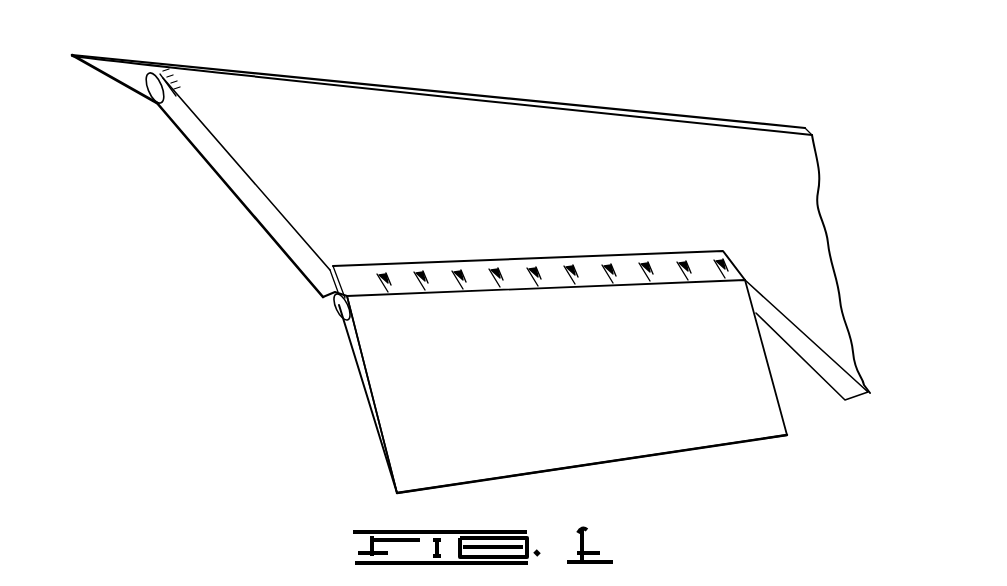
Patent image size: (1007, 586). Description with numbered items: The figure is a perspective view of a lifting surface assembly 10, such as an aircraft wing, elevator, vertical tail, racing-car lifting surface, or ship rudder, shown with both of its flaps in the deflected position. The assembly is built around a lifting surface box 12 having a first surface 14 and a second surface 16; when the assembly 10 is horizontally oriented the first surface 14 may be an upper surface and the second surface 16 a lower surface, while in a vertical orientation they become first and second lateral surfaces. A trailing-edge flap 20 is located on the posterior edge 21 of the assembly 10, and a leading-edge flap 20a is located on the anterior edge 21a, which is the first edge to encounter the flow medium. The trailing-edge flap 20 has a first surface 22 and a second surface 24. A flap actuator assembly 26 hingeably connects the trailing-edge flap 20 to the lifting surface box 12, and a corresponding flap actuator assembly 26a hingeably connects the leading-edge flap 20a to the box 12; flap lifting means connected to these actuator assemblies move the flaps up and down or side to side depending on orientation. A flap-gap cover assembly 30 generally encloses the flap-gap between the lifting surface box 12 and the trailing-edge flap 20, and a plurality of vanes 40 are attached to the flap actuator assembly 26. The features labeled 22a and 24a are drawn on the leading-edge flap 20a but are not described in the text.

The lifting surface assembly 10 is at (625, 40).
The lifting surface box 12 is at (364, 172).
The first surface 14 is at (238, 157).
The second surface 16 is at (232, 200).
The trailing-edge flap 20 is at (494, 391).
The leading-edge flap 20a is at (217, 70).
The posterior edge 21 is at (663, 462).
The anterior edge 21a is at (342, 81).
The first surface of the lifting surface flap 22 is at (358, 352).
The upper hinge flange 22a is at (128, 63).
The second surface of the lifting surface flap 24 is at (360, 385).
The blade edge of mounting plate 24a is at (110, 82).
The flap actuator assembly 26 is at (333, 305).
The flap actuator assembly 26a is at (152, 100).
The flap-gap cover assembly 30 is at (348, 258).
The vanes 40 is at (632, 257).